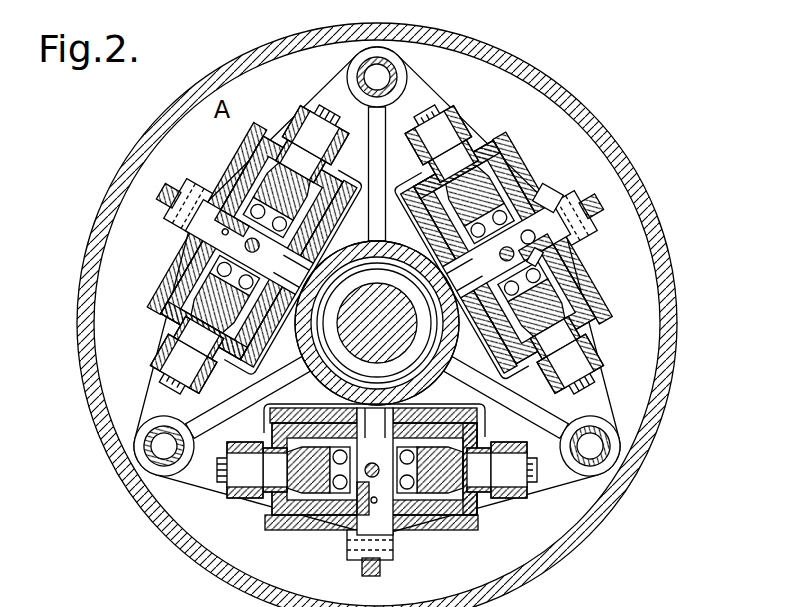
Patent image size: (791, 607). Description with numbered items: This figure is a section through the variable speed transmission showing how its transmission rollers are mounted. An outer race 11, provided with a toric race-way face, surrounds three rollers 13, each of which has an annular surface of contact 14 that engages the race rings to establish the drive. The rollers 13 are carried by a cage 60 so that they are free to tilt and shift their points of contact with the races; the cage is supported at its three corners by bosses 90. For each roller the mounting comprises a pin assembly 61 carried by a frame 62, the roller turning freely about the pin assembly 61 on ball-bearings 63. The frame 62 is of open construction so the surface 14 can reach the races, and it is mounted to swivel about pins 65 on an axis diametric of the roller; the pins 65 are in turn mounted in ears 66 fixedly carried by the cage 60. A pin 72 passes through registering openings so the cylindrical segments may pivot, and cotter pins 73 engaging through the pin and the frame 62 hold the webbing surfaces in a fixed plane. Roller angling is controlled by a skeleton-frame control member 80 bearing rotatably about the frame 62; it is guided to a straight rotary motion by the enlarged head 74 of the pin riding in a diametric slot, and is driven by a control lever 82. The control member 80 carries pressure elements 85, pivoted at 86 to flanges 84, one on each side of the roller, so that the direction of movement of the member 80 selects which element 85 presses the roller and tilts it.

The race 11 is at (155, 325).
The roller 13 is at (290, 140).
The annular surface of contact 14 is at (425, 185).
The cage 60 is at (525, 478).
The pin assembly 61 is at (325, 245).
The frame 62 is at (185, 262).
The ball-bearings 63 is at (335, 510).
The pin 65 is at (325, 110).
The ear 66 is at (300, 120).
The pin 72 is at (370, 500).
The cotter pin 73 is at (272, 205).
The enlarged head 74 is at (272, 428).
The control member 80 is at (228, 167).
The control lever 82 is at (170, 190).
The flange 84 is at (548, 190).
The pressure element 85 is at (532, 262).
The pivot 86 is at (522, 238).
The corner boss 90 is at (395, 75).